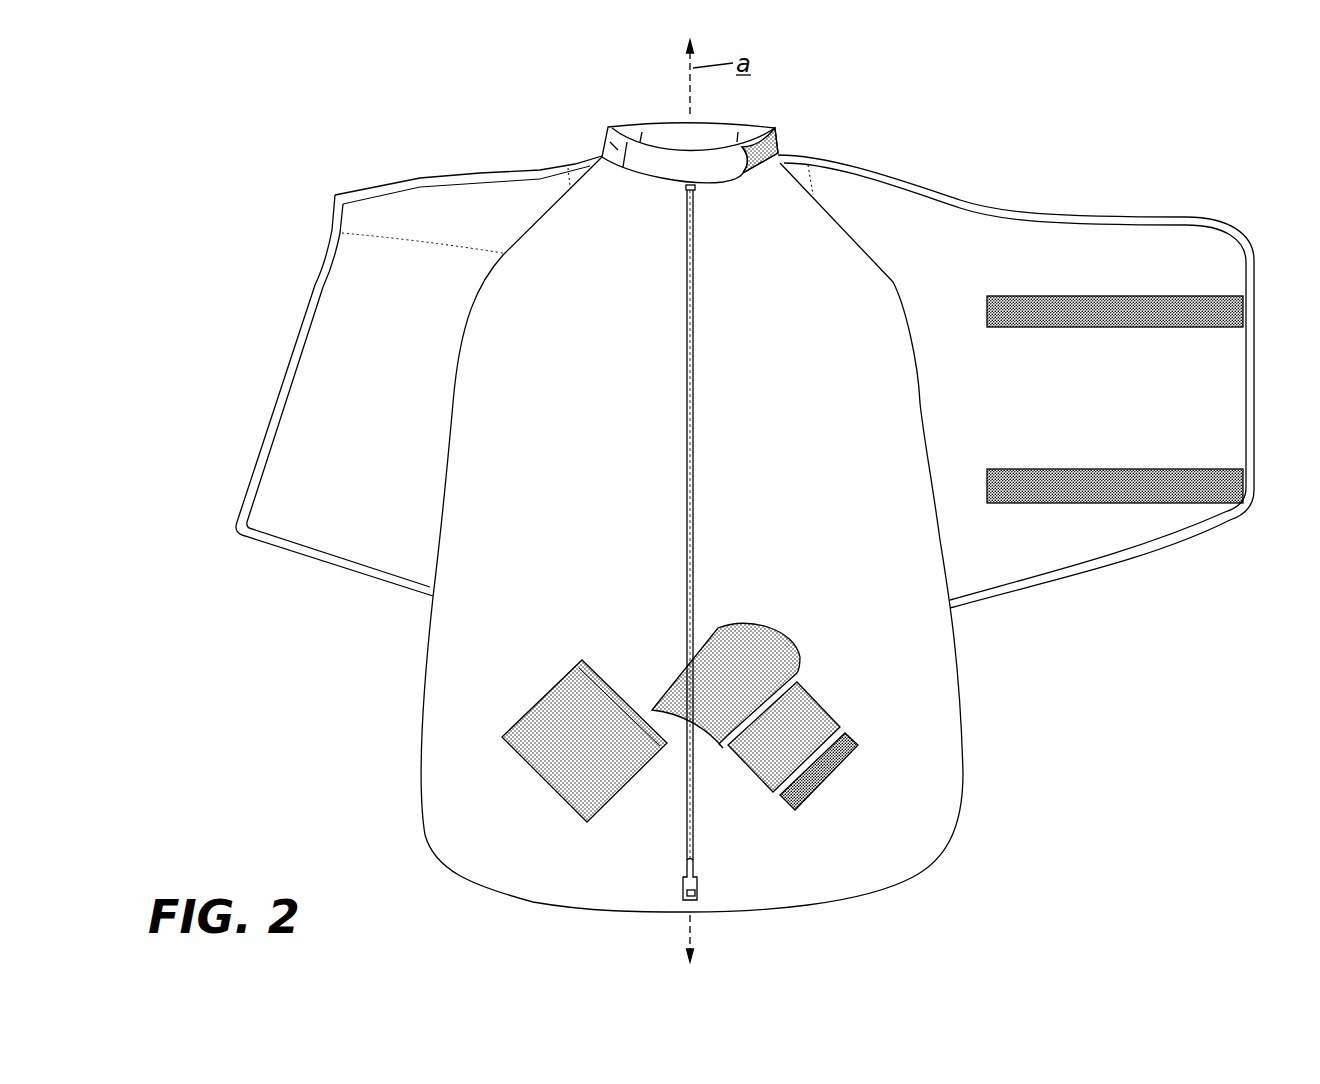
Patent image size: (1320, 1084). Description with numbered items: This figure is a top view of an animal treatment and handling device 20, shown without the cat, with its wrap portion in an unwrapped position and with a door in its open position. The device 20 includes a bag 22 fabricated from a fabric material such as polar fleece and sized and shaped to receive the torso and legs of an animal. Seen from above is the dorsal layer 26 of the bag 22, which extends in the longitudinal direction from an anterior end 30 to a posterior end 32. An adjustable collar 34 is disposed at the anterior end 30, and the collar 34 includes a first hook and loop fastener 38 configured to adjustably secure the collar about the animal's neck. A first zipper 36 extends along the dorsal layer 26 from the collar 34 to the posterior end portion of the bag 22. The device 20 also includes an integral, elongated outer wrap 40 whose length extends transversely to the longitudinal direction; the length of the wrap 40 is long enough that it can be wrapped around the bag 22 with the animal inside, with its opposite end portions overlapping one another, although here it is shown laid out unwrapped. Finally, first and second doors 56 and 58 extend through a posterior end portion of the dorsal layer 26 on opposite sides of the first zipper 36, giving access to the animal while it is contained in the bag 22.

The animal treatment and handling device 20 is at (1048, 682).
The bag 22 is at (937, 840).
The dorsal layer 26 is at (794, 577).
The anterior end 30 is at (805, 147).
The posterior end 32 is at (548, 920).
The adjustable collar 34 is at (603, 128).
The first zipper 36 is at (697, 432).
The first hook and loop fastener 38 is at (778, 128).
The outer wrap 40 is at (983, 235).
The first door 56 is at (533, 705).
The second door 58 is at (832, 707).